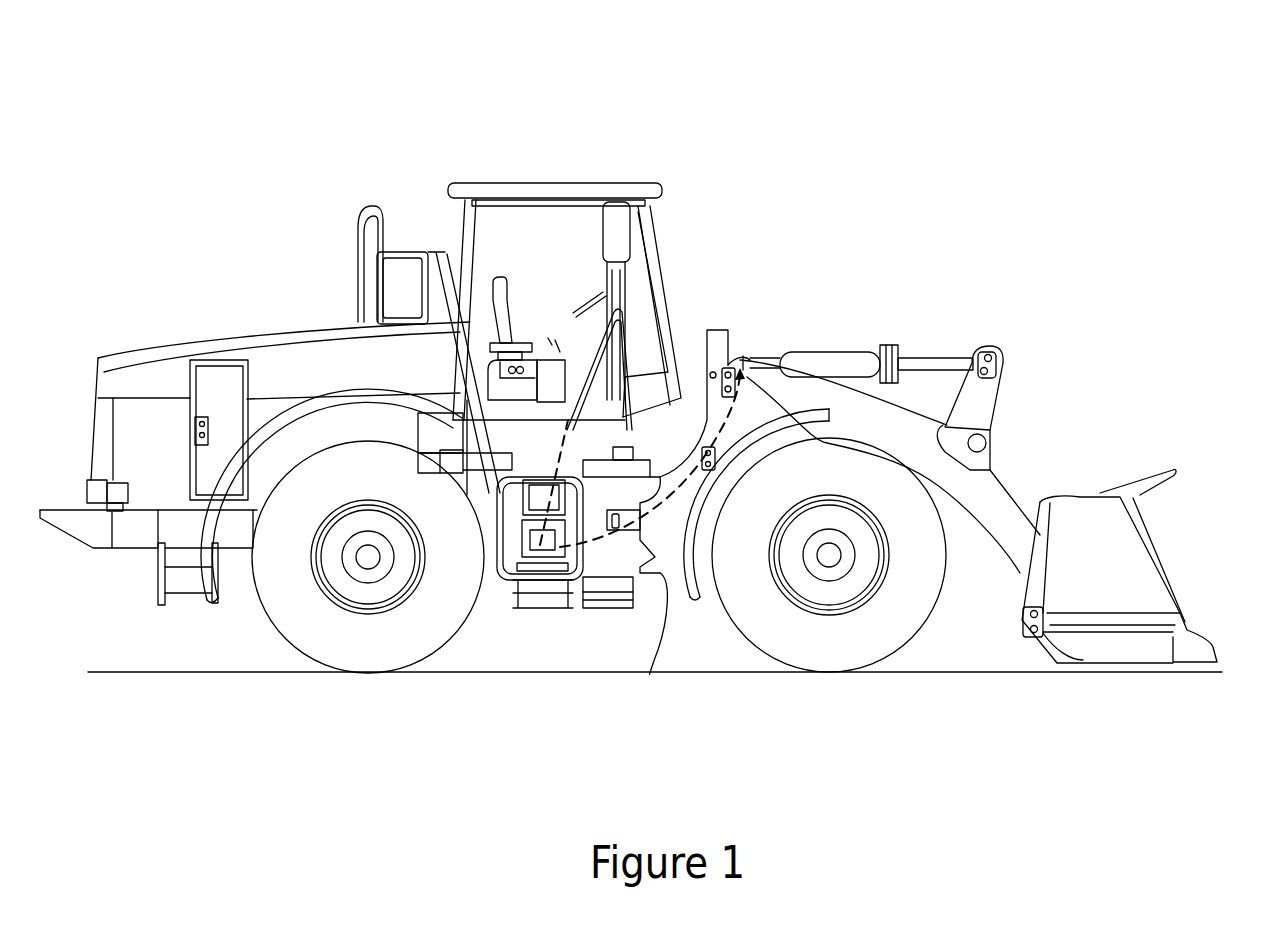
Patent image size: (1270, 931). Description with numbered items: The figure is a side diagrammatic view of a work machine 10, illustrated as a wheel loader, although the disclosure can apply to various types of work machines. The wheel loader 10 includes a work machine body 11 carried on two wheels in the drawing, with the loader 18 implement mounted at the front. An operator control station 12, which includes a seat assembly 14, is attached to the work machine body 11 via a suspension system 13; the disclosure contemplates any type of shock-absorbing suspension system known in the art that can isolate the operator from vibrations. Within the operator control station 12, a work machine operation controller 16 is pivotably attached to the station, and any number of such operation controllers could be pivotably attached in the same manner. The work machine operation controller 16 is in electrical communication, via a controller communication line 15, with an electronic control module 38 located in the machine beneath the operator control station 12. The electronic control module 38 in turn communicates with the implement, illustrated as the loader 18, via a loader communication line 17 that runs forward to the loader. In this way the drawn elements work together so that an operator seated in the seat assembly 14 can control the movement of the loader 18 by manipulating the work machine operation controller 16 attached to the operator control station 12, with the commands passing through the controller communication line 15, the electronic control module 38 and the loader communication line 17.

The work machine 10 is at (471, 143).
The work machine body 11 is at (650, 672).
The operator control station 12 is at (493, 300).
The suspension system 13 is at (503, 407).
The seat assembly 14 is at (573, 370).
The controller communication line 15 is at (548, 463).
The work machine operation controller 16 is at (553, 350).
The loader communication line 17 is at (660, 585).
The loader 18 is at (940, 545).
The electronic control module 38 is at (568, 545).